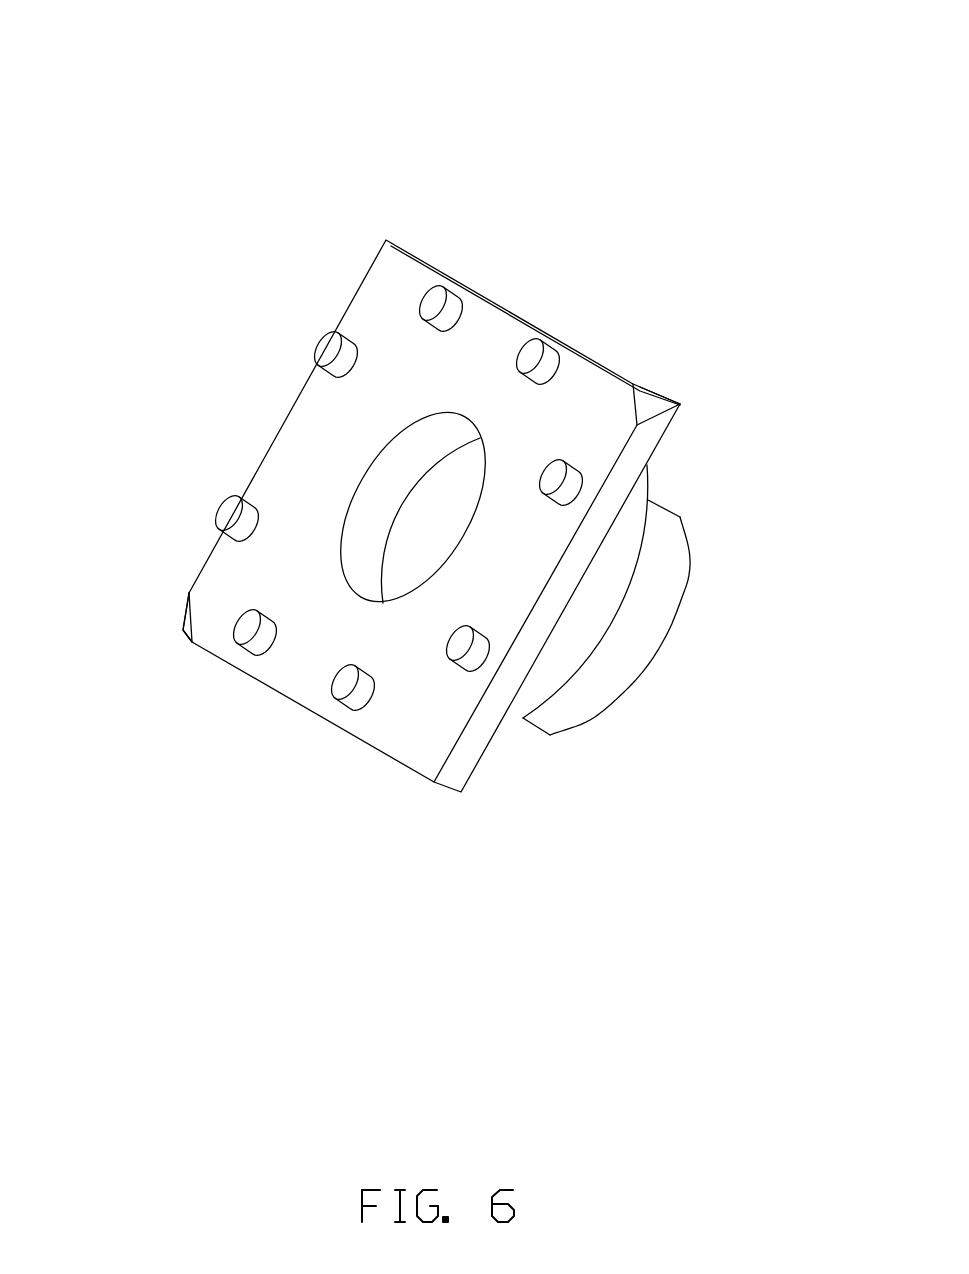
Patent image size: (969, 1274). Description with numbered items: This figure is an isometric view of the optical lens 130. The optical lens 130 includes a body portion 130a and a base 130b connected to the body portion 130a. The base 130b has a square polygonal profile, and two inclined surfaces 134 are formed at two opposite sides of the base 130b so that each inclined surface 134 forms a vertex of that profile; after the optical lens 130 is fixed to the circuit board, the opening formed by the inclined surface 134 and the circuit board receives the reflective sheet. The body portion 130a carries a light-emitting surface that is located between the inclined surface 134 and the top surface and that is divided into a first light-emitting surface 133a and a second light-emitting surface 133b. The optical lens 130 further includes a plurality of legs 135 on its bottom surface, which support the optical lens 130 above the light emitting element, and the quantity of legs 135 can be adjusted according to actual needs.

The optical lens 130 is at (339, 58).
The body portion 130a is at (653, 600).
The base 130b is at (415, 732).
The first light-emitting surface 133a is at (660, 528).
The second light-emitting surface 133b is at (569, 650).
The inclined surface 134 is at (646, 405).
The legs 135 is at (433, 300).